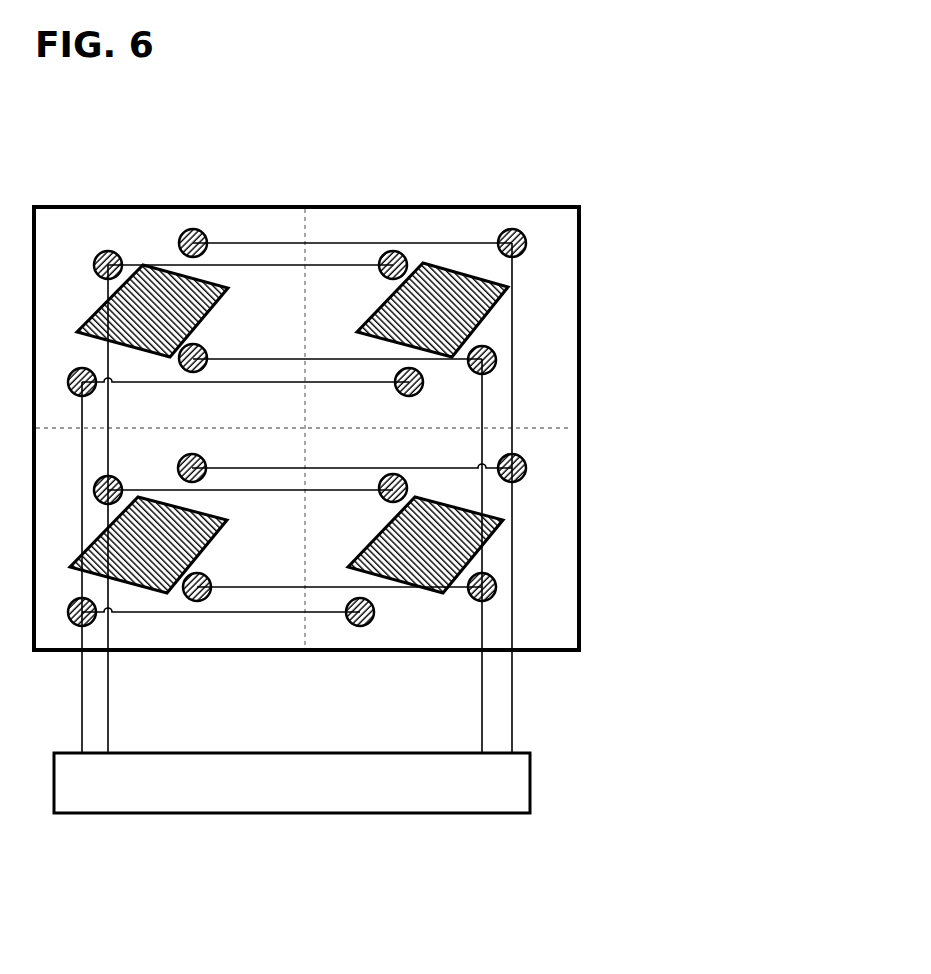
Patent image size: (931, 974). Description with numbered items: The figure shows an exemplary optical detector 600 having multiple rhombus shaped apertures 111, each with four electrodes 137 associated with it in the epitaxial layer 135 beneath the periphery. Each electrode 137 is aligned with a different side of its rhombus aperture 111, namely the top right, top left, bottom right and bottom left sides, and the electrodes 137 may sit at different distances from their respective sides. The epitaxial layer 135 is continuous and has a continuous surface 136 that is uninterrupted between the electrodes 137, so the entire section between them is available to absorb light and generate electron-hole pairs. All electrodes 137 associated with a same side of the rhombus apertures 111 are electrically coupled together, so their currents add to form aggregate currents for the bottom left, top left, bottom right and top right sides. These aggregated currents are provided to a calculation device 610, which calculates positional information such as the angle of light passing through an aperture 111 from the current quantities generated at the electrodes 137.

The optical detector 600 is at (110, 90).
The electrodes 137 is at (501, 232).
The rhombus shaped aperture 111 is at (437, 312).
The epitaxial layer 135 is at (411, 521).
The continuous surface 136 is at (558, 617).
The calculation device 610 is at (423, 797).